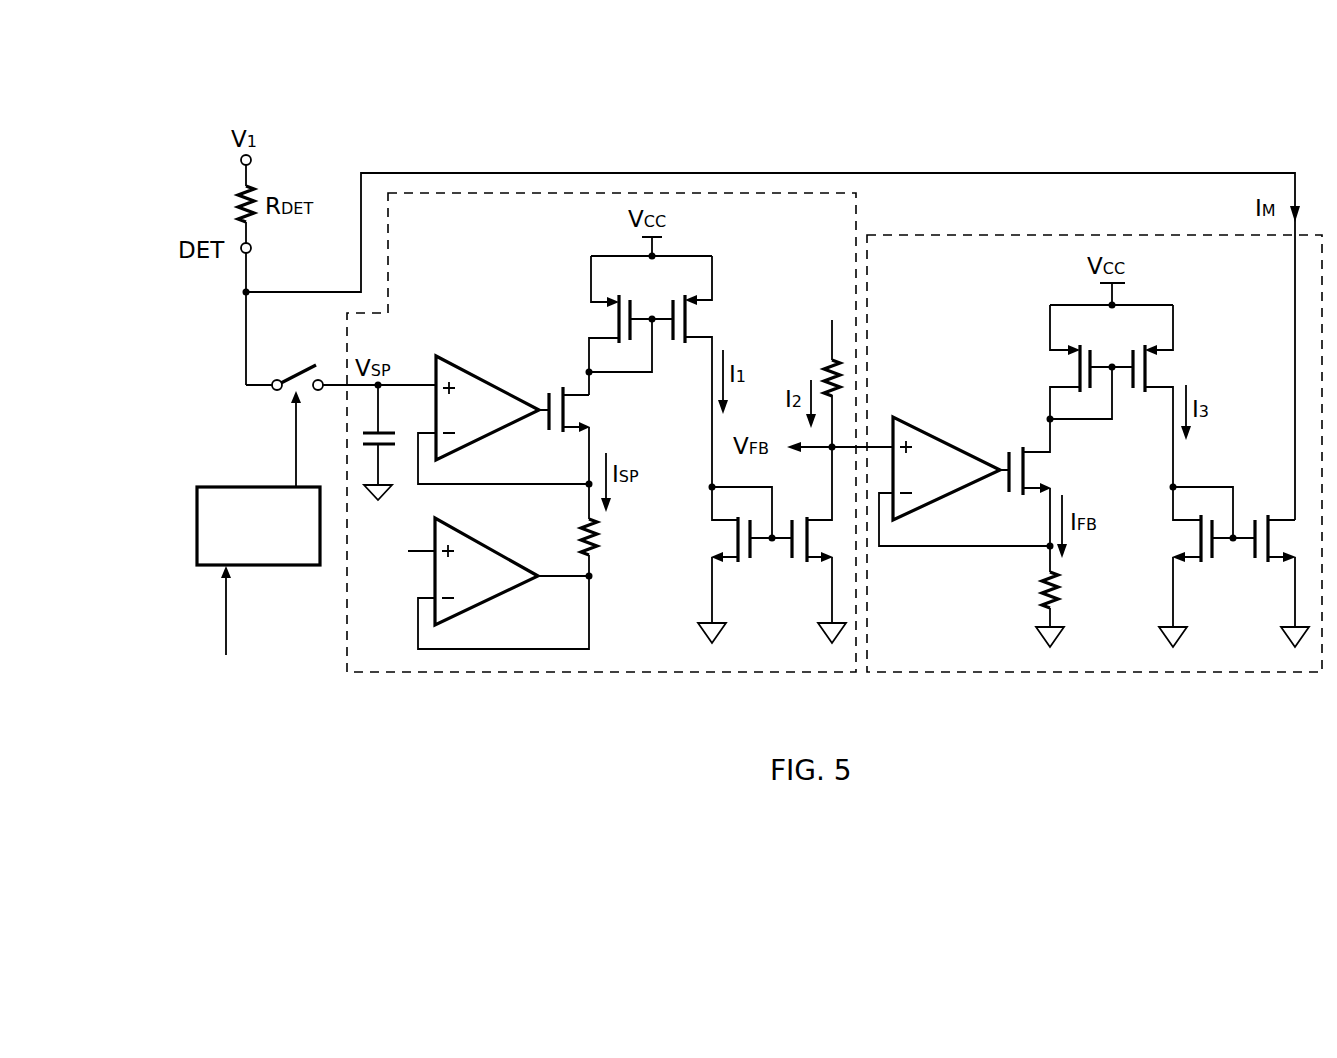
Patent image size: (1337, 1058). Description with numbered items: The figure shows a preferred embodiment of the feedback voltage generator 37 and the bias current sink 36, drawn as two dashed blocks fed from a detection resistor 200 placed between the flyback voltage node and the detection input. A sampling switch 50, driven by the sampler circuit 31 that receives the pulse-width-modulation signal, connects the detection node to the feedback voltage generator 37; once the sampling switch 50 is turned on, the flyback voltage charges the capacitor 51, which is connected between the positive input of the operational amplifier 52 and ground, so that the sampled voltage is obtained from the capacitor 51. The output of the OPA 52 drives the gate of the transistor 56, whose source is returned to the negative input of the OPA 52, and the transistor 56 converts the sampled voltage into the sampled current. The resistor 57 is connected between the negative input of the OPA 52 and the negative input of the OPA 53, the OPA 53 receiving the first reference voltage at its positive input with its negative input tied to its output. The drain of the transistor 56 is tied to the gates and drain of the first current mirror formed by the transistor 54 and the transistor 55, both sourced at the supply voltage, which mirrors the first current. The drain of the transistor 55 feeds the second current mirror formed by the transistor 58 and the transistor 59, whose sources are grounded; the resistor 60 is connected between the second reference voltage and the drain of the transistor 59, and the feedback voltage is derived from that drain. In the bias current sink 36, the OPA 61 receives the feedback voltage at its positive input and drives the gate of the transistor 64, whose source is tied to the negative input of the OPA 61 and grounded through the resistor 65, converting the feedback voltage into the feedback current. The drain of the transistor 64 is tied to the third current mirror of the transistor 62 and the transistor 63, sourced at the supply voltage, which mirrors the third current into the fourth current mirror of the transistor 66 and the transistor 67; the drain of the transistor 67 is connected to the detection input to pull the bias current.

The detection resistor RDET 200 is at (230, 204).
The sampling switch 50 is at (278, 405).
The sampler circuit 31 is at (285, 565).
The capacitor 51 is at (395, 423).
The operational amplifier 52 is at (502, 385).
The OPA 53 is at (497, 545).
The transistor 54 is at (592, 322).
The transistor 55 is at (703, 325).
The transistor 56 is at (585, 405).
The resistor 57 is at (605, 538).
The transistor 58 is at (723, 540).
The transistor 59 is at (813, 565).
The resistor 60 is at (817, 370).
The OPA 61 is at (953, 440).
The transistor 62 is at (1052, 373).
The transistor 63 is at (1175, 370).
The transistor 64 is at (1045, 470).
The resistor 65 is at (1067, 587).
The transistor 66 is at (1177, 533).
The transistor 67 is at (1273, 567).
The feedback voltage generator 37 is at (545, 675).
The bias current sink 36 is at (1120, 675).